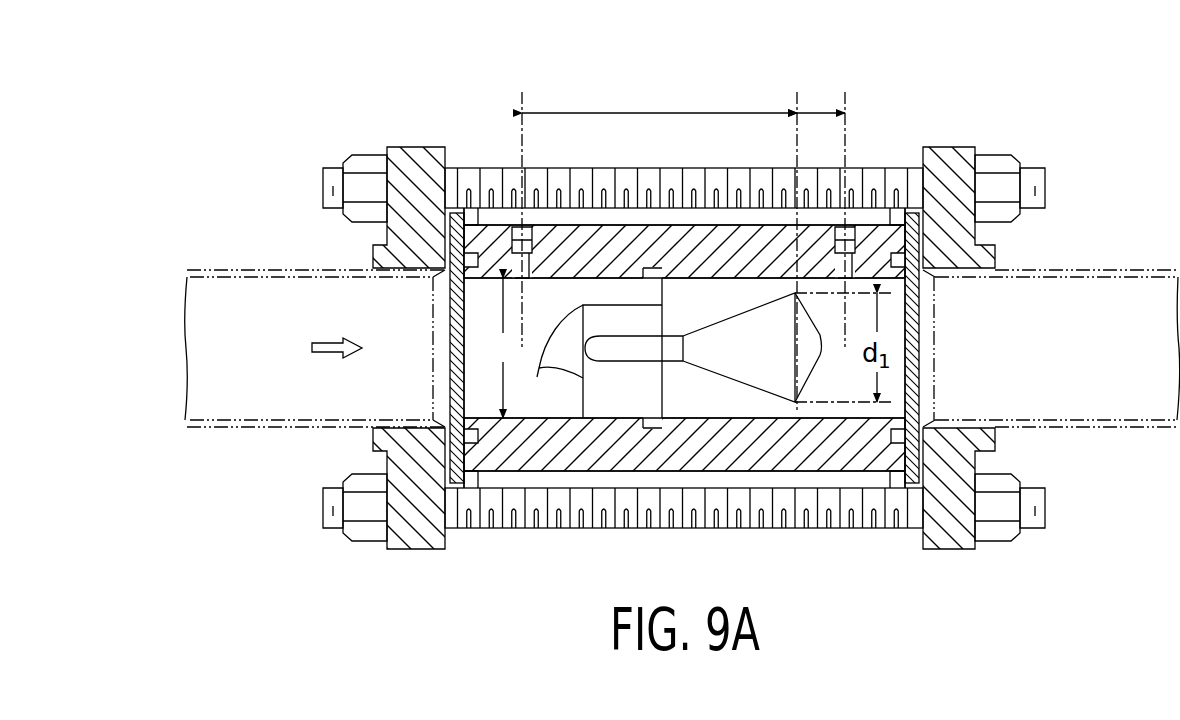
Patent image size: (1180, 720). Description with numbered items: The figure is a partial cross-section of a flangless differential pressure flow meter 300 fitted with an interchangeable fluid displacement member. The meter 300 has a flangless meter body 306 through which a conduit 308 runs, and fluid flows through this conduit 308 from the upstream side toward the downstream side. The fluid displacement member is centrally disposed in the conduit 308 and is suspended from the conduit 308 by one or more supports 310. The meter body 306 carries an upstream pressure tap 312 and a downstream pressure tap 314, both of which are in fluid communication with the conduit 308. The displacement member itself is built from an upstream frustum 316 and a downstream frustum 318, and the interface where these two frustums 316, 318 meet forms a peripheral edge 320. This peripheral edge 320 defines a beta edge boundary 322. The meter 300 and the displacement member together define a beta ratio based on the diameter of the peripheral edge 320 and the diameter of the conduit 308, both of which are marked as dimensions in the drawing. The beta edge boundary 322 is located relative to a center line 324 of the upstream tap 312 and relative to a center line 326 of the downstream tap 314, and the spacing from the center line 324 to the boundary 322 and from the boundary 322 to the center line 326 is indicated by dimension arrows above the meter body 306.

The flangless differential pressure flow meter 300 is at (998, 124).
The flangless meter body 306 is at (715, 240).
The conduit 308 is at (483, 313).
The support 310 is at (591, 348).
The upstream pressure tap 312 is at (522, 227).
The downstream pressure tap 314 is at (852, 227).
The upstream frustum 316 is at (738, 385).
The downstream frustum 318 is at (808, 367).
The peripheral edge 320 is at (795, 348).
The beta edge boundary 322 is at (797, 92).
The center line of the upstream tap 324 is at (522, 92).
The center line of the downstream tap 326 is at (847, 92).